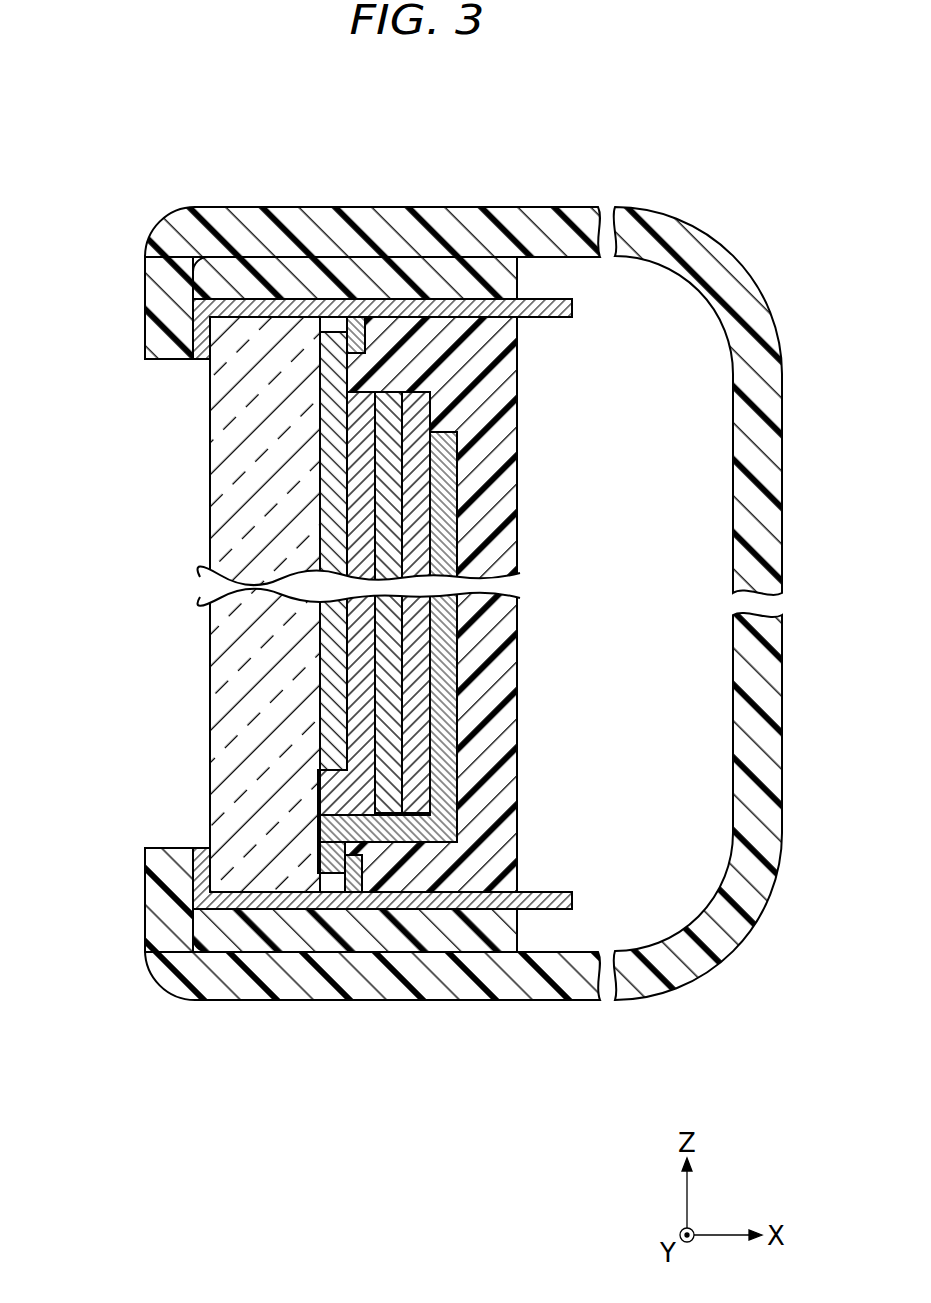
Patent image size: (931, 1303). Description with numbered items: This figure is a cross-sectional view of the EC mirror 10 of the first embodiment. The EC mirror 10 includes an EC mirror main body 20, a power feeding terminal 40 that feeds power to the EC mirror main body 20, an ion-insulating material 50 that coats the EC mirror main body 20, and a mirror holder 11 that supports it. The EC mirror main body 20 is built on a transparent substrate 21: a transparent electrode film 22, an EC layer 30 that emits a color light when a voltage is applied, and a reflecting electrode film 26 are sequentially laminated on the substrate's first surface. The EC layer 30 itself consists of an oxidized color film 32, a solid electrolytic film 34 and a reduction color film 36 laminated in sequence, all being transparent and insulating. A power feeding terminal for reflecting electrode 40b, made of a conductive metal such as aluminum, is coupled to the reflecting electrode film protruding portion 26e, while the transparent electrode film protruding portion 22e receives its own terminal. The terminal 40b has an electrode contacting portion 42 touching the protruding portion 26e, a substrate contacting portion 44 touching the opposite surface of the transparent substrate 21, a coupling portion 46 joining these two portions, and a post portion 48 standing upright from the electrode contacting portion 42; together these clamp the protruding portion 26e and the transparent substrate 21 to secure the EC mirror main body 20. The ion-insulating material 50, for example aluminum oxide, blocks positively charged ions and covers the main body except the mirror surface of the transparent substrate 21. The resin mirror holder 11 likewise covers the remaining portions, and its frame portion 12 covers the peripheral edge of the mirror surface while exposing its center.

The EC mirror 10 is at (132, 191).
The mirror holder 11 is at (213, 215).
The frame portion 12 is at (150, 342).
The EC mirror main body 20 is at (208, 485).
The transparent substrate 21 is at (238, 330).
The transparent electrode film 22 is at (330, 352).
The transparent electrode film protruding portion 22e is at (358, 335).
The reflecting electrode film 26 is at (445, 432).
The reflecting electrode film protruding portion 26e is at (357, 880).
The EC layer 30 is at (458, 137).
The oxidized color film 32 is at (363, 392).
The solid electrolytic film 34 is at (392, 392).
The reduction color film 36 is at (417, 392).
The power feeding terminal 40 is at (545, 298).
The power feeding terminal for reflecting electrode 40b is at (545, 910).
The electrode contacting portion 42 is at (362, 860).
The substrate contacting portion 44 is at (190, 903).
The coupling portion 46 is at (270, 907).
The post portion 48 is at (472, 958).
The ion-insulating material 50 is at (520, 758).